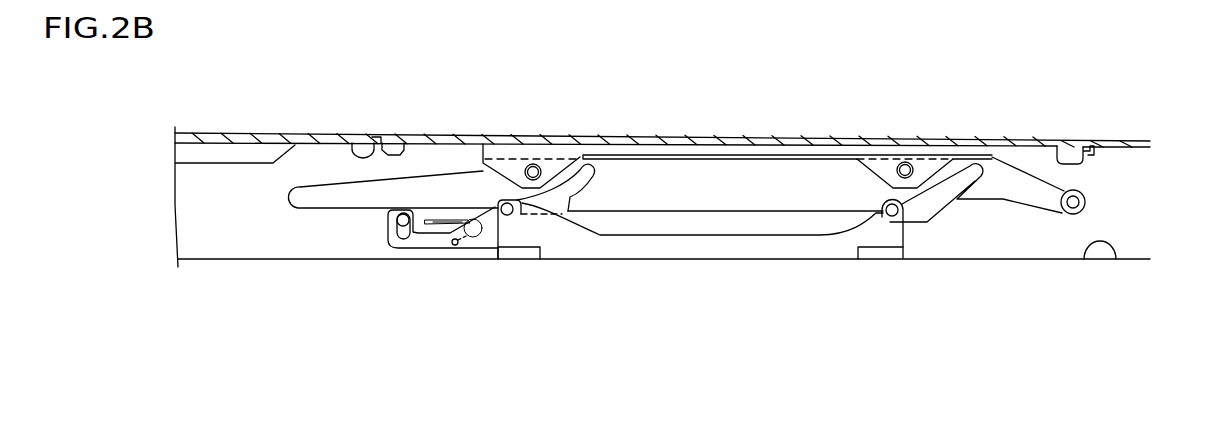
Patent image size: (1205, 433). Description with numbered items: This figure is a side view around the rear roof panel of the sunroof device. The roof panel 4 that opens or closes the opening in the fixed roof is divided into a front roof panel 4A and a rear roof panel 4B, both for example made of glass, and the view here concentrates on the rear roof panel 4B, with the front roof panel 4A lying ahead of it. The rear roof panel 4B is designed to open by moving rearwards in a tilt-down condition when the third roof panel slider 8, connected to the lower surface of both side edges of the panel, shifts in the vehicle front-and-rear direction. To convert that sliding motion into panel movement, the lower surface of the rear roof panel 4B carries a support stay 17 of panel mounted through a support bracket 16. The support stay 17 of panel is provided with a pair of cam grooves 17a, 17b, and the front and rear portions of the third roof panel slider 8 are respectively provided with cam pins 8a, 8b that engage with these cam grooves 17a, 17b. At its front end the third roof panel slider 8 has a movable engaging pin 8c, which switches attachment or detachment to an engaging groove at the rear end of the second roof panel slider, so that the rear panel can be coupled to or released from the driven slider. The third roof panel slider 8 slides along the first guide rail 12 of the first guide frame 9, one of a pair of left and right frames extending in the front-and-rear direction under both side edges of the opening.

The roof panel 4 is at (662, 169).
The front roof panel 4A is at (242, 133).
The rear roof panel 4B is at (515, 133).
The support bracket 16 is at (822, 152).
The support stay of panel 17 is at (686, 197).
The cam groove 17a is at (564, 197).
The cam groove 17b is at (948, 201).
The third roof panel slider 8 is at (627, 263).
The cam pin 8a is at (507, 215).
The cam pin 8b is at (892, 216).
The movable engaging pin 8c is at (403, 222).
The first guide rail 12 is at (664, 283).
The first guide frame 9 is at (1112, 260).